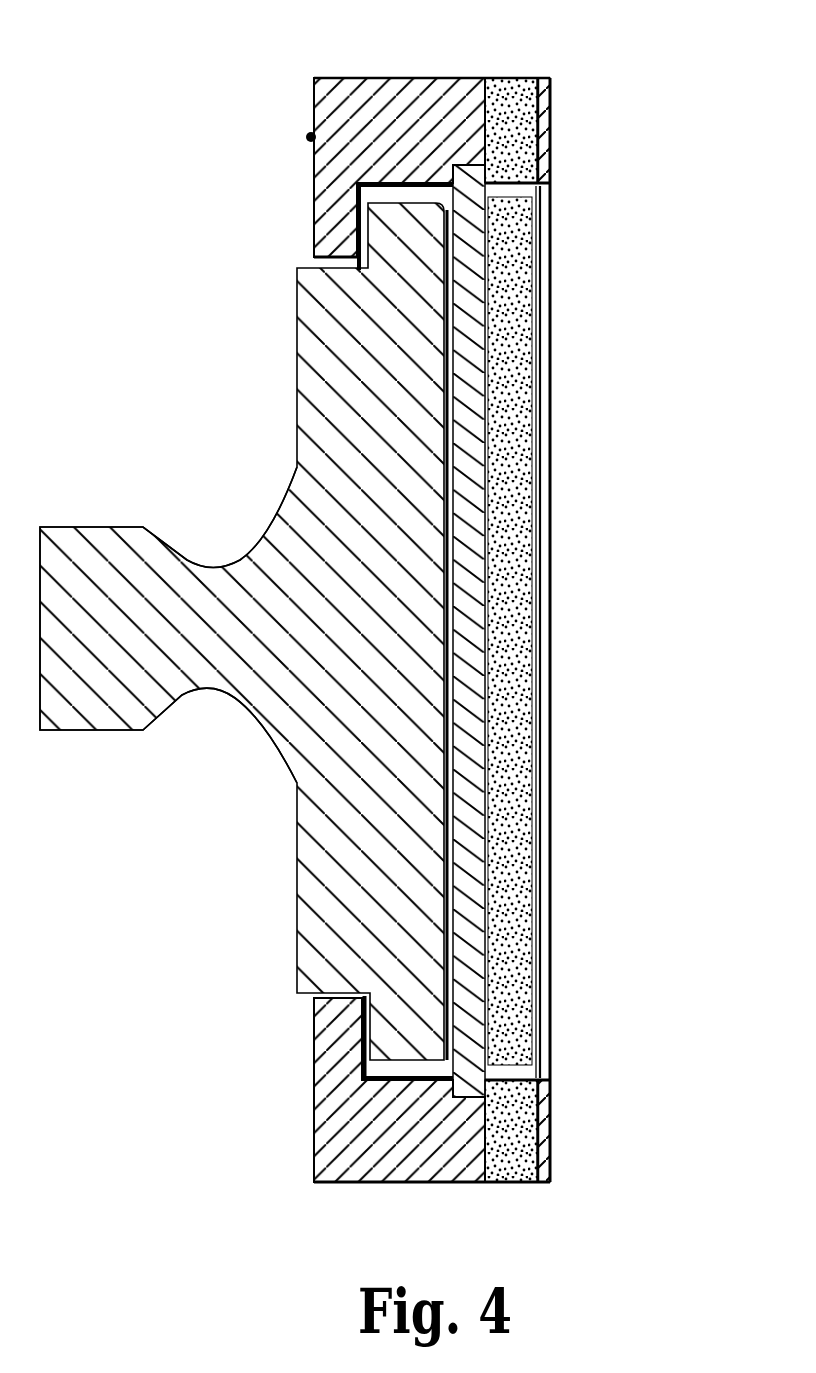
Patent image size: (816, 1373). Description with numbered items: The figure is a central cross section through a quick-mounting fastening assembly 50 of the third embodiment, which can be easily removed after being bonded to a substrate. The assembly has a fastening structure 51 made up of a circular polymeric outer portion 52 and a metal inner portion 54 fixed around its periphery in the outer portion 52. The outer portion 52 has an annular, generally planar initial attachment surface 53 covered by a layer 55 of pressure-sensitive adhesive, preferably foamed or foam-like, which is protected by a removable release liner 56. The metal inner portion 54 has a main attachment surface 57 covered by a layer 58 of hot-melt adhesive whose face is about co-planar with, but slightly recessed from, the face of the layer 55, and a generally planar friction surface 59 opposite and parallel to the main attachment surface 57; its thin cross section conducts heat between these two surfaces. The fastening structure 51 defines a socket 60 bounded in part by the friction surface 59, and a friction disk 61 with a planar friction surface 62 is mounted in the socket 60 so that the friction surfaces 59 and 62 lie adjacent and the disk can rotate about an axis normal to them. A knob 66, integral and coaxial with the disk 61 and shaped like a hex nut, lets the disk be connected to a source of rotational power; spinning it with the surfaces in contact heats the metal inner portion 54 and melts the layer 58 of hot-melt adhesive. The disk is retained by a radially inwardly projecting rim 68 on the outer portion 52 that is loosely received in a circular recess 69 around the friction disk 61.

The quick-mounting fastening assembly 50 is at (150, 420).
The fastening structure 51 is at (327, 139).
The circular polymeric outer portion 52 is at (397, 88).
The initial attachment surface 53 is at (512, 87).
The metal inner portion 54 is at (468, 373).
The layer of pressure-sensitive adhesive 55 is at (513, 107).
The removable release liner 56 is at (547, 129).
The main attachment surface 57 is at (488, 549).
The layer of hot-melt adhesive 58 is at (523, 750).
The friction surface 59 is at (440, 813).
The socket 60 is at (405, 186).
The friction disk 61 is at (350, 425).
The planar friction surface 62 is at (447, 913).
The knob 66 is at (108, 718).
The radially inwardly projecting rim 68 is at (333, 225).
The circular recess 69 is at (362, 1010).